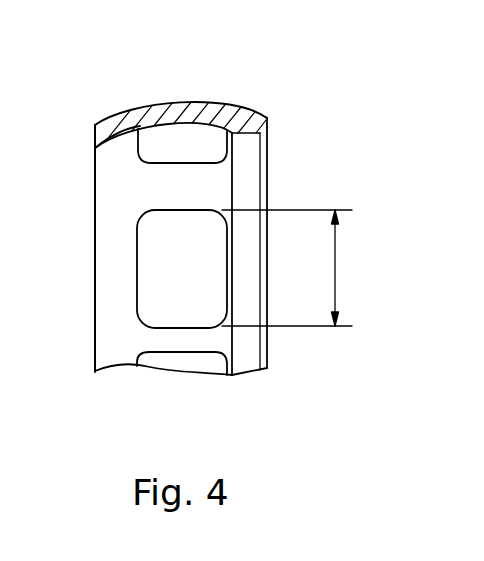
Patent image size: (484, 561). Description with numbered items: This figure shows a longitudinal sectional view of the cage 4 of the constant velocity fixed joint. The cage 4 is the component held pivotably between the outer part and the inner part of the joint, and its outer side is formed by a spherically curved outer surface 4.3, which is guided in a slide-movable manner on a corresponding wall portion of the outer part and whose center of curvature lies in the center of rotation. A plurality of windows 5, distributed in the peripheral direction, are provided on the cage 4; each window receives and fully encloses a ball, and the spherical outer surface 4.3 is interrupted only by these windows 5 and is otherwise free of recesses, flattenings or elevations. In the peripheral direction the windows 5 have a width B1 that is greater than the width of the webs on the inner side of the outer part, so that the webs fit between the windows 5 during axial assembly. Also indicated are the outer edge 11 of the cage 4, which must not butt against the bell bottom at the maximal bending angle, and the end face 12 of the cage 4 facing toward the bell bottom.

The cage 4 is at (300, 122).
The spherical outer surface 4.3 is at (150, 98).
The window 5 is at (195, 172).
The outer edge 11 is at (95, 125).
The end face 12 is at (95, 148).
The width of the windows B1 is at (298, 268).